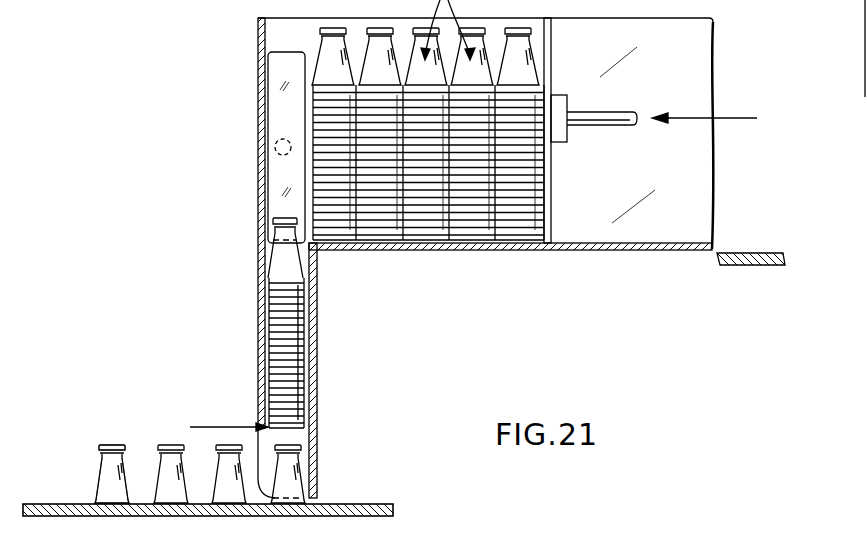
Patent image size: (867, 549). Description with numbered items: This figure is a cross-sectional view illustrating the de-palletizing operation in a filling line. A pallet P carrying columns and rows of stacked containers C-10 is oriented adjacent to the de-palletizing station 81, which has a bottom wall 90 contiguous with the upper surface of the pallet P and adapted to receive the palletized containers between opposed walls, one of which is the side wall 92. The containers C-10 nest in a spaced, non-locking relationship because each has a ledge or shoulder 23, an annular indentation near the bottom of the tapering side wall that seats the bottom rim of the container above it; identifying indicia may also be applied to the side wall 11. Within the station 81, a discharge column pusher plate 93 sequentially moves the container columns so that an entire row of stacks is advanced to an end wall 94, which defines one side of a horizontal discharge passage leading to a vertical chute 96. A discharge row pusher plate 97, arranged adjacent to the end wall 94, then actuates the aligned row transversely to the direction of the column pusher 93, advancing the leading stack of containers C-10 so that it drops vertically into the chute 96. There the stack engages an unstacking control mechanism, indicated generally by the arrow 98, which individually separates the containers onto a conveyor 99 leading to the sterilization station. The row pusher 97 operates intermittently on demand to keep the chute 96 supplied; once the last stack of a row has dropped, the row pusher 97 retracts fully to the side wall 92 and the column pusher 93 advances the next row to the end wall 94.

The de-palletizing station 81 is at (238, 218).
The bottom wall 90 is at (632, 245).
The side wall 92 is at (697, 55).
The discharge column pusher plate 93 is at (548, 67).
The end wall 94 is at (258, 133).
The vertical chute 96 is at (318, 297).
The discharge row pusher plate 97 is at (283, 67).
The unstacking control mechanism 98 is at (220, 422).
The conveyor 99 is at (357, 500).
The side wall 11 is at (96, 475).
The ledge or shoulder 23 is at (96, 453).
The container C-10 is at (167, 440).
The pallet P is at (757, 243).